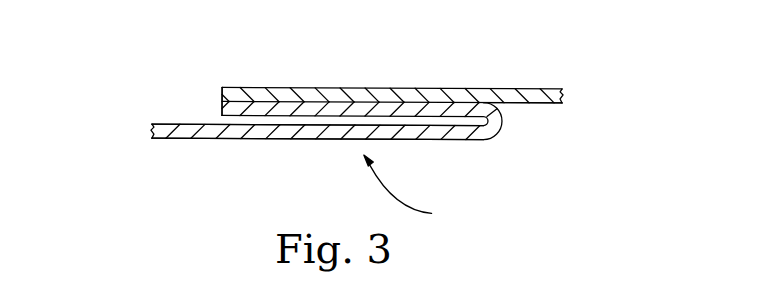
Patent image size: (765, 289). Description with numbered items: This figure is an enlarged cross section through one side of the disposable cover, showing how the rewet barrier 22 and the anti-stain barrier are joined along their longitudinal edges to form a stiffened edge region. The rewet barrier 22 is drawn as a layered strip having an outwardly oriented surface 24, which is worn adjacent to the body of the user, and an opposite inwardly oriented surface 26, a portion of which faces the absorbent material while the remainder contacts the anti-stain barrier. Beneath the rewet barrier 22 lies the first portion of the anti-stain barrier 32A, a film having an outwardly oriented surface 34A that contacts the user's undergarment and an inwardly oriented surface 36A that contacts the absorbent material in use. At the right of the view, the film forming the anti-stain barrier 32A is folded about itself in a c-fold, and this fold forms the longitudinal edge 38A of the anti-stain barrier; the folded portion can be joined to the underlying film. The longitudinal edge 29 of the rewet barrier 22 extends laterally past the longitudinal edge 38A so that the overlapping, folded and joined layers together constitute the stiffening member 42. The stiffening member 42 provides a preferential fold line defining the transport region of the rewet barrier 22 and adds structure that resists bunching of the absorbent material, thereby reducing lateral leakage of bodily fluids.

The rewet barrier 22 is at (295, 87).
The outwardly oriented surface 24 is at (440, 88).
The inwardly oriented surface 26 is at (528, 103).
The longitudinal edge 29 is at (222, 100).
The first portion of the anti-stain barrier 32A is at (232, 133).
The outwardly oriented surface 34A is at (207, 125).
The inwardly oriented surface 36A is at (203, 138).
The longitudinal edge 38A is at (502, 122).
The stiffening member 42 is at (414, 190).